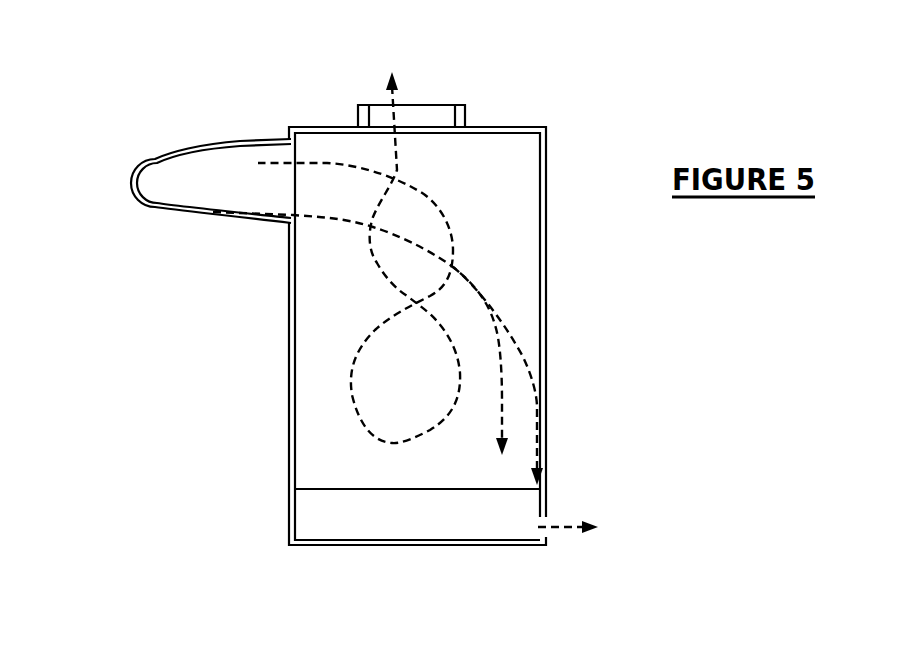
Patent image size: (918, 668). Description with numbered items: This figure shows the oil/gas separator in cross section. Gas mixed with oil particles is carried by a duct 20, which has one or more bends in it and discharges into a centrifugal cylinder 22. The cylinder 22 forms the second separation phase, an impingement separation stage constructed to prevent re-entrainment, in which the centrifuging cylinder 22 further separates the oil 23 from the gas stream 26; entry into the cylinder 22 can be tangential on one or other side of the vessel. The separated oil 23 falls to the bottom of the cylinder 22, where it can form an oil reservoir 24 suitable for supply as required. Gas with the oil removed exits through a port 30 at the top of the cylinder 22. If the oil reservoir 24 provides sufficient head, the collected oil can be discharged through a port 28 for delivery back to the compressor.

The duct 20 is at (175, 193).
The centrifugal cylinder 22 is at (291, 405).
The oil 23 is at (508, 323).
The oil reservoir 24 is at (313, 515).
The gas stream 26 is at (373, 265).
The port 28 is at (568, 544).
The port 30 is at (450, 103).